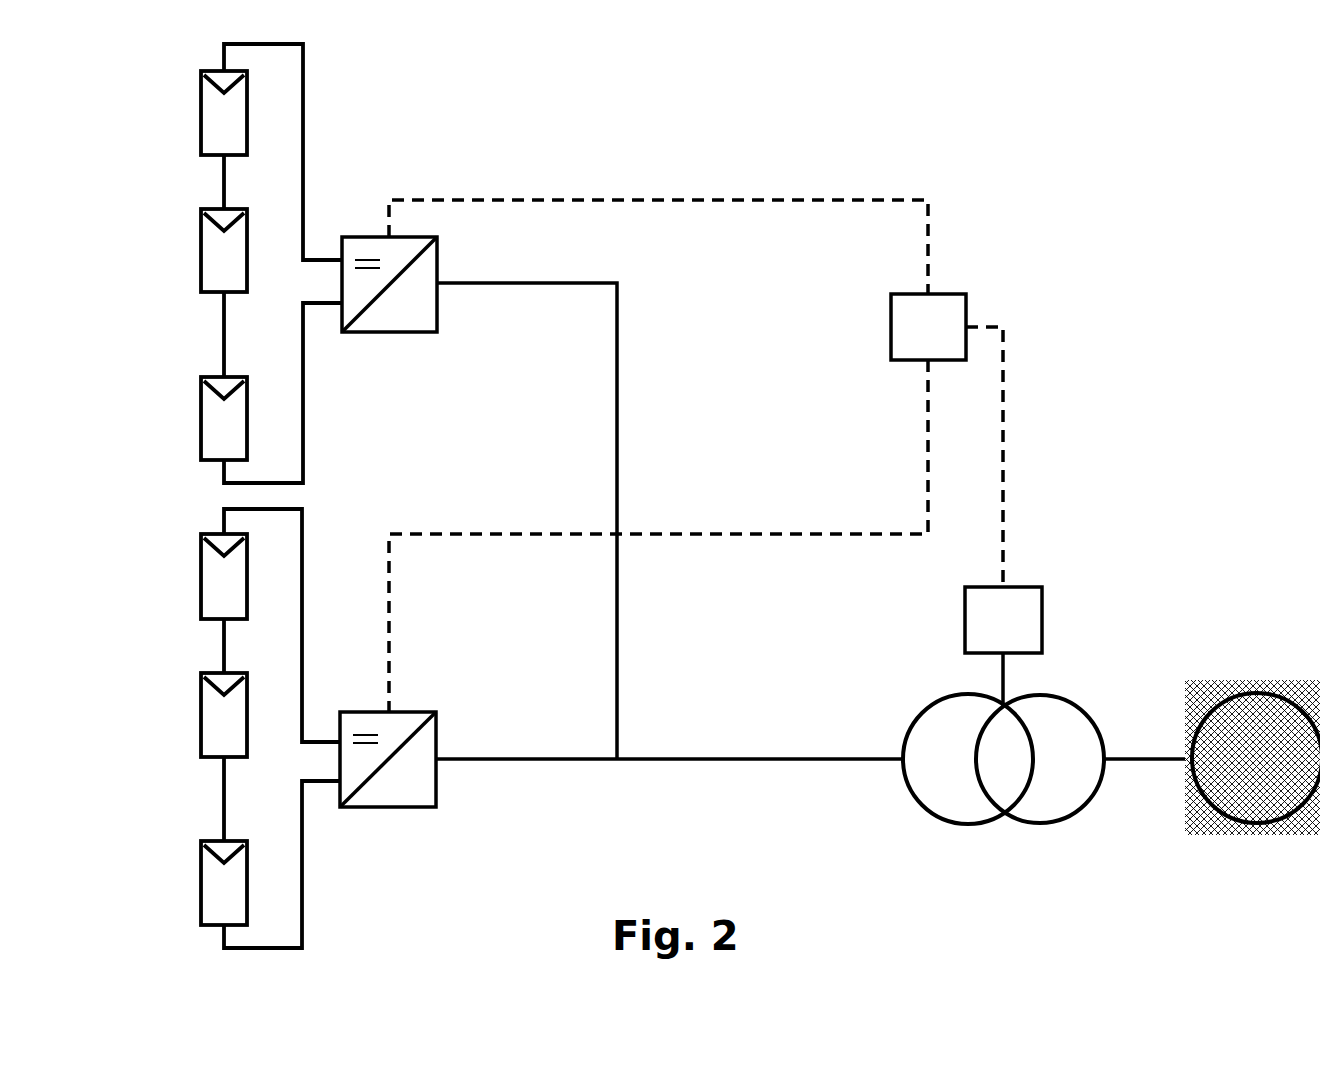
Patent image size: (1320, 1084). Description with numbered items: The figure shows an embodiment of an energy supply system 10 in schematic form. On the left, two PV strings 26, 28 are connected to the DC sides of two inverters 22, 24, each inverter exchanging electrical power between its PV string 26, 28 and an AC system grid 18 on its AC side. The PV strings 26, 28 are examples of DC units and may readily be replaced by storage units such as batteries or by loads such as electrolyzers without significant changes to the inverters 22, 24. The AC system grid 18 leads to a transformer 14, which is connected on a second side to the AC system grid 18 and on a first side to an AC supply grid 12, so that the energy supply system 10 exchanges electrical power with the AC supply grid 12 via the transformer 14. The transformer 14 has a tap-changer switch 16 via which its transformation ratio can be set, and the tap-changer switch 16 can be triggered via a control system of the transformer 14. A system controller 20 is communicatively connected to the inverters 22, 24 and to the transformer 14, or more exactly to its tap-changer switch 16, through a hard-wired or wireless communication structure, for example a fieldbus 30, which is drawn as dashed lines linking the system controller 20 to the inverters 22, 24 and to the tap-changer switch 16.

The energy supply system 10 is at (1090, 180).
The AC supply grid 12 is at (1210, 683).
The transformer 14 is at (990, 826).
The tap-changer switch 16 is at (1003, 647).
The AC system grid 18 is at (697, 761).
The system controller 20 is at (928, 327).
The inverter 22 is at (421, 334).
The inverter 24 is at (420, 809).
The PV string 26 is at (186, 57).
The PV string 28 is at (188, 523).
The fieldbus 30 is at (773, 200).